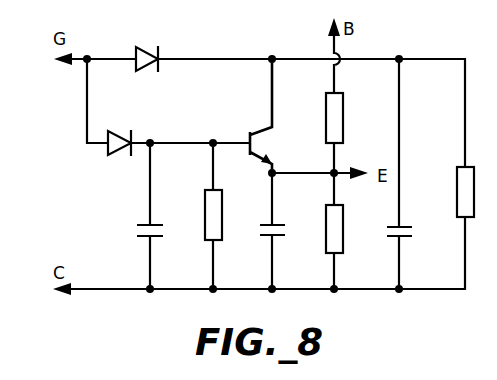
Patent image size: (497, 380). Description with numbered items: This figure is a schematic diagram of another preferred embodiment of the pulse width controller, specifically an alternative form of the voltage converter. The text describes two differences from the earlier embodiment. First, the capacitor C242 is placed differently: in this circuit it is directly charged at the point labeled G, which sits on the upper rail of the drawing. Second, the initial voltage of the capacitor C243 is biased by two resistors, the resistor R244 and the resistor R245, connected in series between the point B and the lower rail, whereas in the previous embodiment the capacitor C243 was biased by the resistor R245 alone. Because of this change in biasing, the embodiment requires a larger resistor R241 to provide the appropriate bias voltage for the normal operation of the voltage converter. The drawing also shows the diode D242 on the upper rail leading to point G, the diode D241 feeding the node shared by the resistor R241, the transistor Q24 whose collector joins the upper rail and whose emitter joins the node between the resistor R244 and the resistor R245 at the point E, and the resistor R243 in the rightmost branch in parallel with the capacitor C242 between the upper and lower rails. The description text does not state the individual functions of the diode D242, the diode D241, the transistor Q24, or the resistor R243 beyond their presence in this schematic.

The diode D242 is at (160, 74).
The diode D241 is at (120, 156).
The resistor R241 is at (190, 216).
The transistor Q24 is at (248, 116).
The capacitor C243 is at (252, 231).
The resistor R244 is at (310, 95).
The resistor R245 is at (311, 231).
The capacitor C242 is at (419, 174).
The resistor R243 is at (442, 180).